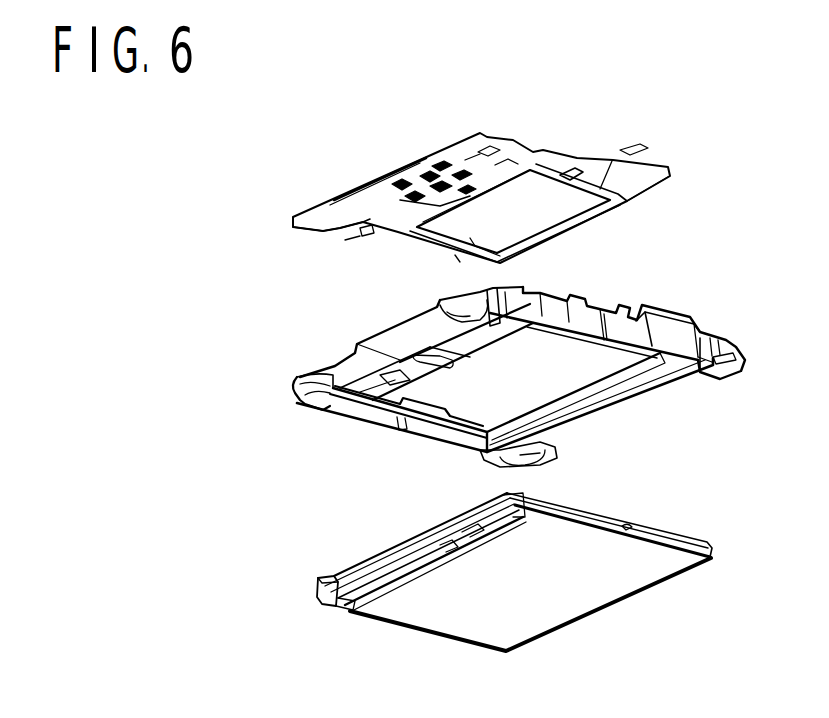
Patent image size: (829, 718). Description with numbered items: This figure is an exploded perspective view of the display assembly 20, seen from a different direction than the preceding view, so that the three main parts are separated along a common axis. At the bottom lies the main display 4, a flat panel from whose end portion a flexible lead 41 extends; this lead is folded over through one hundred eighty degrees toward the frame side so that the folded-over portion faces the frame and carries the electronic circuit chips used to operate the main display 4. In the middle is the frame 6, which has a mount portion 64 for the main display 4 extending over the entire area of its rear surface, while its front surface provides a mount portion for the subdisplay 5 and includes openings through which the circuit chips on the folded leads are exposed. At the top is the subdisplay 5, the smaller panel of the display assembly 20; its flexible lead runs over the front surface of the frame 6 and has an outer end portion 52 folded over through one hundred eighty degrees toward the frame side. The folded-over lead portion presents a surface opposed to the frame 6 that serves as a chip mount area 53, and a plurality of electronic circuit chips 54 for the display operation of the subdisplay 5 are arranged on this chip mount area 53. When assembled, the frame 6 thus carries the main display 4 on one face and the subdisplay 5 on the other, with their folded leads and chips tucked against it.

The main display 4 is at (533, 548).
The flexible lead 41 is at (382, 560).
The subdisplay 5 is at (478, 187).
The outer end portion 52 is at (380, 174).
The chip mount area 53 is at (370, 202).
The electronic circuit chips 54 is at (407, 207).
The frame 6 is at (519, 348).
The mount portion 64 is at (610, 393).
The display assembly 20 is at (463, 348).